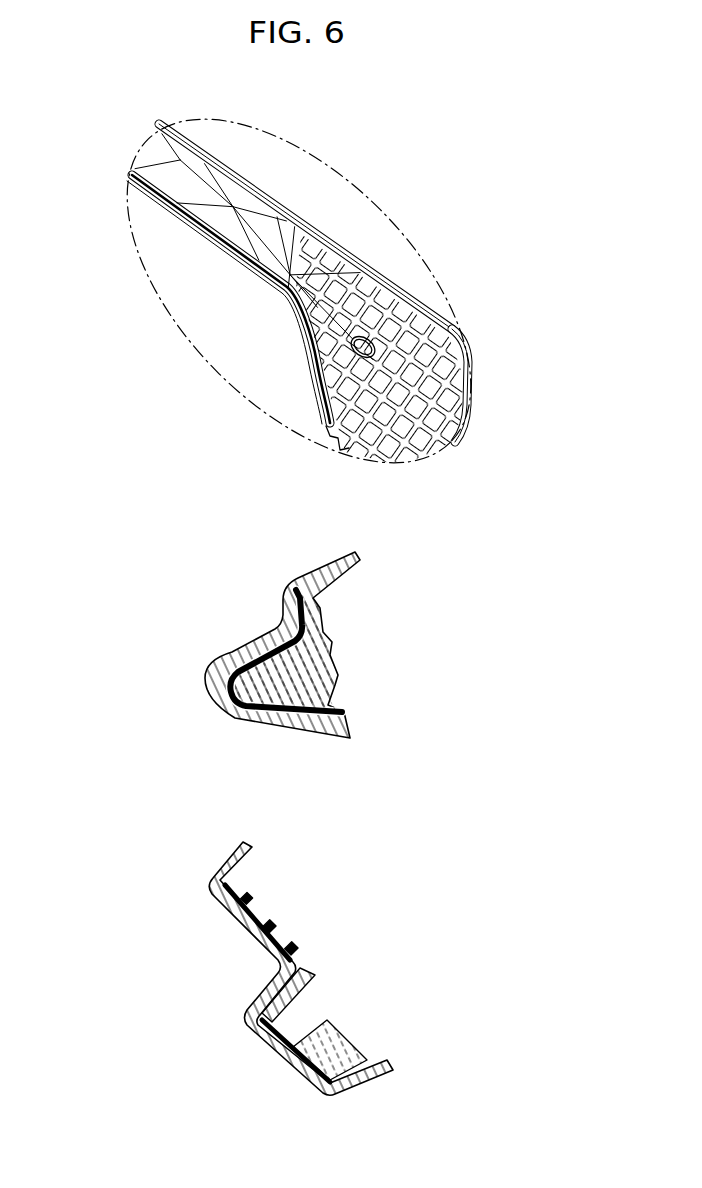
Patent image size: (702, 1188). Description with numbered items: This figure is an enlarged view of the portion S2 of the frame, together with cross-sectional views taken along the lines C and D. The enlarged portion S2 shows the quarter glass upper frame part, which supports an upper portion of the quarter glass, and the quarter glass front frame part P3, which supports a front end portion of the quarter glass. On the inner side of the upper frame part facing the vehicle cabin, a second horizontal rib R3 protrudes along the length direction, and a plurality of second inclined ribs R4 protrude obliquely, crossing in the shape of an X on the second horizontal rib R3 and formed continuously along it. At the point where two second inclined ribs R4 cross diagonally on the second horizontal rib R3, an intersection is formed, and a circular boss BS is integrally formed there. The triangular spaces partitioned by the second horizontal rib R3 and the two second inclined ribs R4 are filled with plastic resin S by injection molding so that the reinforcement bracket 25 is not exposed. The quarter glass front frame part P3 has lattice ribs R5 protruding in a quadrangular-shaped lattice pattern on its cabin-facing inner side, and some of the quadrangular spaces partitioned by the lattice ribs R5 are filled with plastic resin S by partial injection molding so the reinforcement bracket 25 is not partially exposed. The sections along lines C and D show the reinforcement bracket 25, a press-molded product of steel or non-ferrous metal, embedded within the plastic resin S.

The second horizontal rib R3 is at (185, 178).
The second inclined ribs R4 is at (265, 186).
The lattice ribs R5 is at (387, 398).
The plastic resin S is at (277, 227).
The portion S2 is at (405, 200).
The reinforcement bracket 25 is at (397, 320).
The circular boss BS is at (224, 224).
The quarter glass front frame part P3 is at (477, 362).
The section line C- C is at (231, 152).
The section line D- D is at (481, 326).